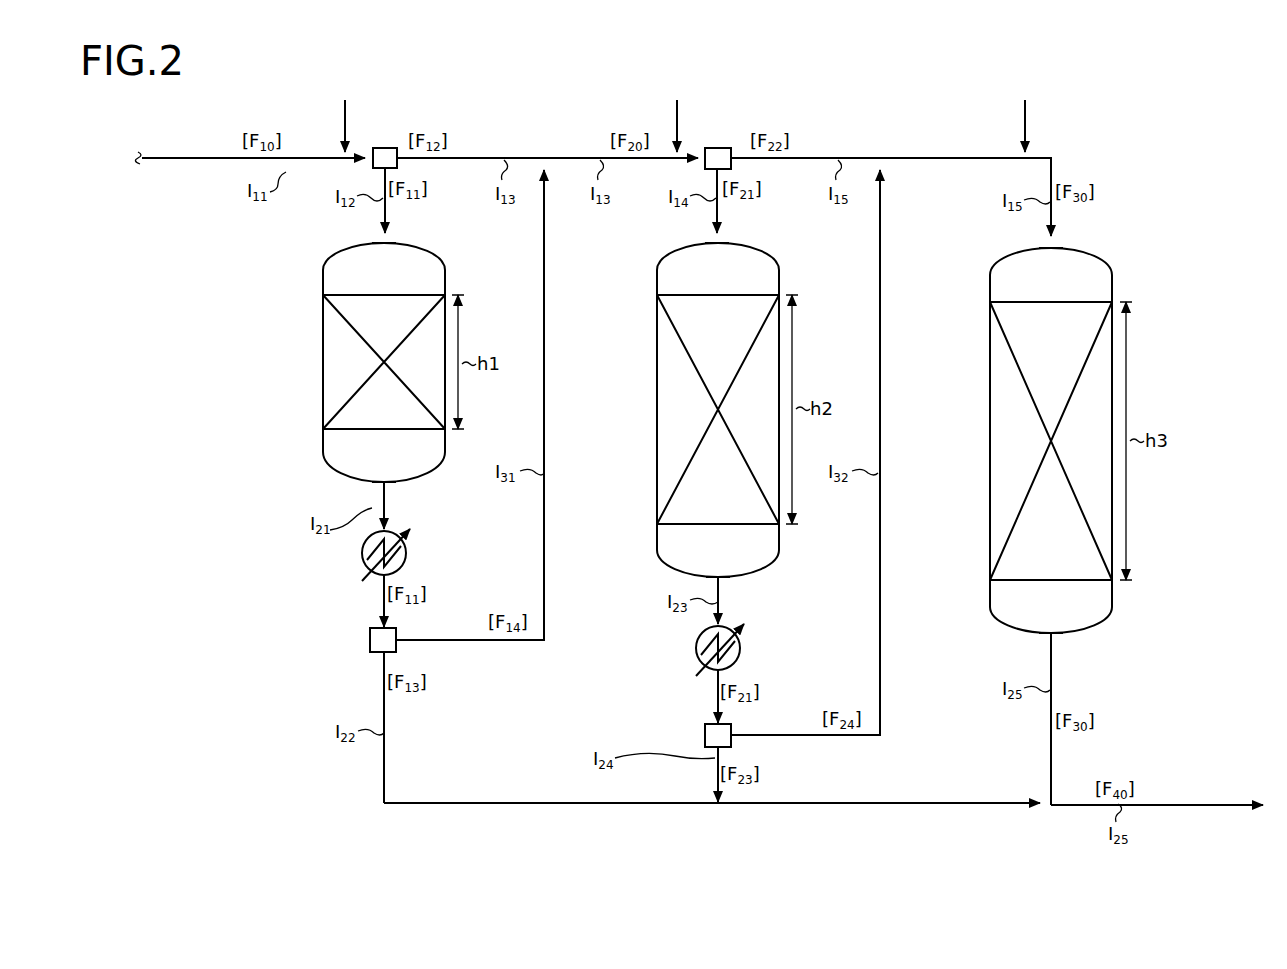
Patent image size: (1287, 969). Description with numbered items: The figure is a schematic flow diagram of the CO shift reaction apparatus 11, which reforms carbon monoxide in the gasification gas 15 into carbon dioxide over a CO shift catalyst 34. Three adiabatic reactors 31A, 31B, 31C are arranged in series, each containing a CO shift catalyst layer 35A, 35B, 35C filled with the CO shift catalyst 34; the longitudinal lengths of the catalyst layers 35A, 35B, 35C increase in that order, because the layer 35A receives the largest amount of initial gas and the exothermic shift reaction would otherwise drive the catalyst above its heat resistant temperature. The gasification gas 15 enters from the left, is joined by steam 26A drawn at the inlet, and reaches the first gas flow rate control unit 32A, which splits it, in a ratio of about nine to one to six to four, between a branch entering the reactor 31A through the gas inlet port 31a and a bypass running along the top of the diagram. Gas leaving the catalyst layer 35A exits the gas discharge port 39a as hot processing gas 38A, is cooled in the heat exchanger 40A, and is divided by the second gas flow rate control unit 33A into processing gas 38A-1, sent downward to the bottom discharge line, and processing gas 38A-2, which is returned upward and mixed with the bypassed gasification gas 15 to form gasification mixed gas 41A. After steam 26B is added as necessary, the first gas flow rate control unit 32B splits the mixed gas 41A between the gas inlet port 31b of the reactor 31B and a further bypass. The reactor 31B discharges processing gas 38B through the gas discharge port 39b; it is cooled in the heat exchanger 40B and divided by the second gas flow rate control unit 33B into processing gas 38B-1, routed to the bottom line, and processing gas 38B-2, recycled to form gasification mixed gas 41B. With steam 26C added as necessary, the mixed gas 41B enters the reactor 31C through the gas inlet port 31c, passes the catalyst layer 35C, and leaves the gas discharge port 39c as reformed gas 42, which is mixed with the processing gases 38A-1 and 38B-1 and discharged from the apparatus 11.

The CO shift reaction apparatus 11 is at (770, 100).
The gasification gas 15 is at (190, 148).
The hydrogen supply line A 26A is at (348, 110).
The steam 26B is at (682, 110).
The steam 26C is at (1030, 110).
The first gas flow rate control unit 32A is at (386, 146).
The first gas flow rate control unit 32B is at (718, 146).
The gasification mixed gas 41A is at (592, 148).
The gasification mixed gas 41B is at (952, 148).
The adiabatic reactor 31A is at (322, 270).
The adiabatic reactor 31B is at (670, 270).
The adiabatic reactor 31C is at (990, 272).
The gas inlet port 31a is at (376, 242).
The gas inlet port 31b is at (708, 242).
The gas inlet port 31c is at (1042, 248).
The CO shift catalyst layer 35A is at (328, 288).
The CO shift catalyst layer 35B is at (673, 288).
The CO shift catalyst layer 35C is at (1006, 286).
The CO shift catalyst 34 is at (342, 381).
The gas discharge port 39a is at (378, 480).
The gas discharge port 39b is at (708, 582).
The gas discharge port 39c is at (1038, 640).
The processing gas 38A is at (393, 494).
The processing gas 38B is at (727, 589).
The heat exchanger 40A is at (362, 555).
The heat exchanger 40B is at (698, 650).
The second gas flow rate control unit 33A is at (371, 642).
The second gas flow rate control unit 33B is at (701, 738).
The processing gas 38A-1 is at (375, 680).
The processing gas 38A-2 is at (558, 625).
The processing gas 38B-1 is at (707, 770).
The processing gas 38B-2 is at (890, 718).
The reformed gas 42 is at (1060, 652).